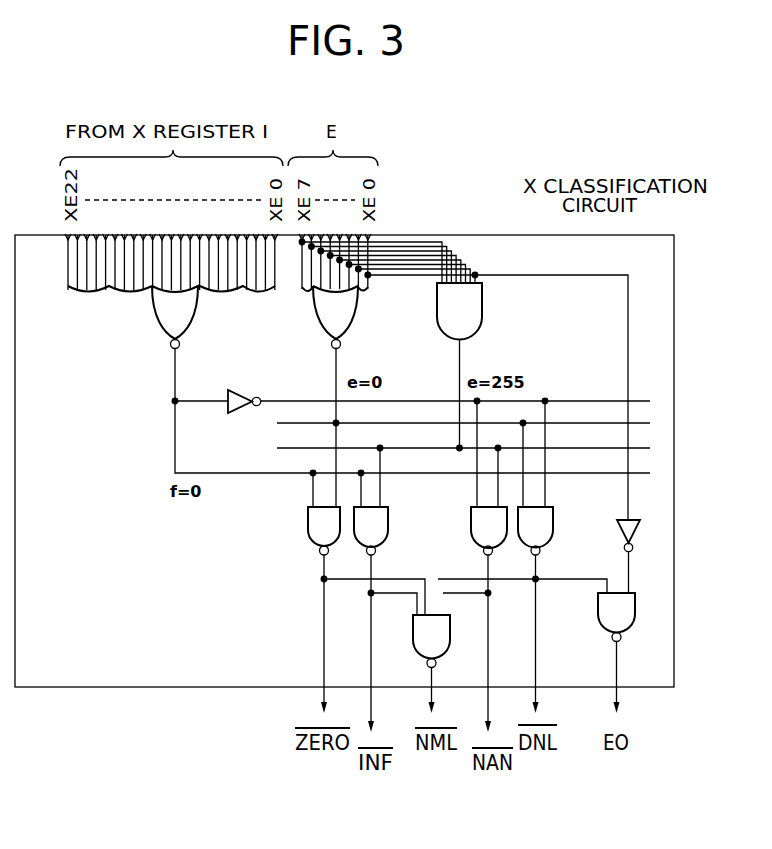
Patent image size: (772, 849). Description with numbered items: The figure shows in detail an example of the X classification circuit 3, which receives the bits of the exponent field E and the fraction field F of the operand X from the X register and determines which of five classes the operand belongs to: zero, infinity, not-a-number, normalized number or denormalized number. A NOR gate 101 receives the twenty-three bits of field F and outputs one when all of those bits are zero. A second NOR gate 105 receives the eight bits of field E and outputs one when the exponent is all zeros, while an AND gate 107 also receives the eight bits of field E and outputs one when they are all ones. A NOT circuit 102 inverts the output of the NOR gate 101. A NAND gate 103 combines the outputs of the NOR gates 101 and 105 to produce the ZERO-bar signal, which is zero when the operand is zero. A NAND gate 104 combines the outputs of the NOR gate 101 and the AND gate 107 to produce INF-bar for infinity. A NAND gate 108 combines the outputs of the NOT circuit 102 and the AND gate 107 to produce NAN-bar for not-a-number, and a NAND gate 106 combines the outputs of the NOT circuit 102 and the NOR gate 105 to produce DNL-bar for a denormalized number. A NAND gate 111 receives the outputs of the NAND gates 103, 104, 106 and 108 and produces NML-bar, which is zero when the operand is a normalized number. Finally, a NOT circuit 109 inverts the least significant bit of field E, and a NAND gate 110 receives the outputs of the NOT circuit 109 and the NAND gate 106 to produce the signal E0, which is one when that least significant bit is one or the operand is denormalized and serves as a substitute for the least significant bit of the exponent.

The X classification circuit 3 is at (493, 235).
The NOR gate 101 is at (157, 325).
The NOT circuit 102 is at (243, 413).
The NAND gate 103 is at (306, 532).
The NAND gate 104 is at (389, 530).
The second NOR gate 105 is at (318, 326).
The NAND gate 106 is at (553, 530).
The AND gate 107 is at (437, 318).
The NAND gate 108 is at (472, 534).
The NOT circuit 109 is at (617, 526).
The NAND gate 110 is at (598, 607).
The NAND gate 111 is at (449, 642).